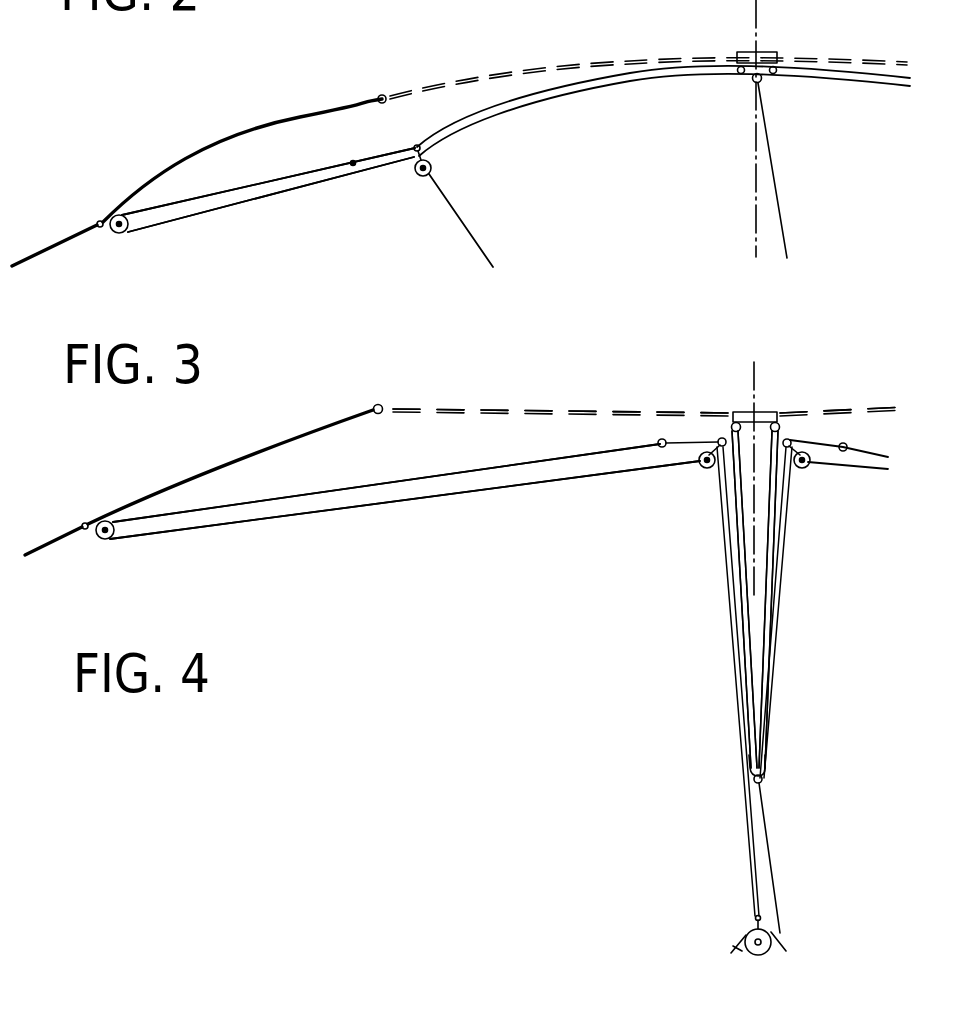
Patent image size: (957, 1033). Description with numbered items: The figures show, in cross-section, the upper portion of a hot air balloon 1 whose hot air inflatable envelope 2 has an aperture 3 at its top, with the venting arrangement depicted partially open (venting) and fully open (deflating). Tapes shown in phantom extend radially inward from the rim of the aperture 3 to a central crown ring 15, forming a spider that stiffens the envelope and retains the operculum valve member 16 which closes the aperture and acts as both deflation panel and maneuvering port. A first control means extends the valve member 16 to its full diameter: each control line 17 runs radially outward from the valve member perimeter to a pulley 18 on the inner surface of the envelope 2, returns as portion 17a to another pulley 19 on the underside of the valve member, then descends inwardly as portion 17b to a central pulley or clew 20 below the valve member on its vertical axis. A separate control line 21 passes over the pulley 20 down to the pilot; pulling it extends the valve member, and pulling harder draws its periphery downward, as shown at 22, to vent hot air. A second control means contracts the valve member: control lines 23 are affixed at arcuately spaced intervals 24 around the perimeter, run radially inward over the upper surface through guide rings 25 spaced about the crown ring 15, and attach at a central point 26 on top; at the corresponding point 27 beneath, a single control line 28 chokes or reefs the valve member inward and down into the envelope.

In FIG. 3, the hot air balloon 1 is at (133, 188).
In FIG. 4, the hot air balloon 1 is at (158, 477).
In FIG. 3, the hot air inflatable envelope 2 is at (55, 247).
In FIG. 4, the hot air inflatable envelope 2 is at (58, 542).
In FIG. 3, the aperture 3 is at (690, 40).
In FIG. 4, the aperture 3 is at (614, 398).
In FIG. 3, the central crown ring 15 is at (774, 52).
In FIG. 4, the central crown ring 15 is at (771, 410).
In FIG. 3, the operculum valve member 16 is at (583, 90).
In FIG. 4, the operculum valve member 16 is at (732, 637).
In FIG. 3, the control line 17 is at (273, 178).
In FIG. 4, the control line 17 is at (337, 488).
In FIG. 3, the control line return portion 17a is at (312, 186).
In FIG. 4, the control line return portion 17a is at (448, 493).
In FIG. 3, the control line downward portion 17b is at (478, 236).
In FIG. 4, the control line downward portion 17b is at (727, 583).
In FIG. 3, the pulley 18 is at (123, 234).
In FIG. 4, the pulley 18 is at (108, 540).
In FIG. 3, the pulley 19 is at (420, 180).
In FIG. 4, the pulley 19 is at (702, 470).
In FIG. 4, the central pulley or clew 20 is at (768, 955).
In FIG. 4, the control line 21 is at (740, 940).
In FIG. 3, the venting position 22 is at (482, 93).
In FIG. 3, the control lines 23 is at (600, 70).
In FIG. 4, the control lines 23 is at (749, 688).
In FIG. 3, the arcuately spaced intervals 24 is at (418, 142).
In FIG. 4, the arcuately spaced intervals 24 is at (728, 425).
In FIG. 4, the guide rings 25 is at (782, 427).
In FIG. 4, the central point 26 is at (760, 765).
In FIG. 3, the corresponding point 27 is at (766, 85).
In FIG. 4, the corresponding point 27 is at (762, 781).
In FIG. 3, the control line 28 is at (780, 220).
In FIG. 4, the control line 28 is at (773, 878).